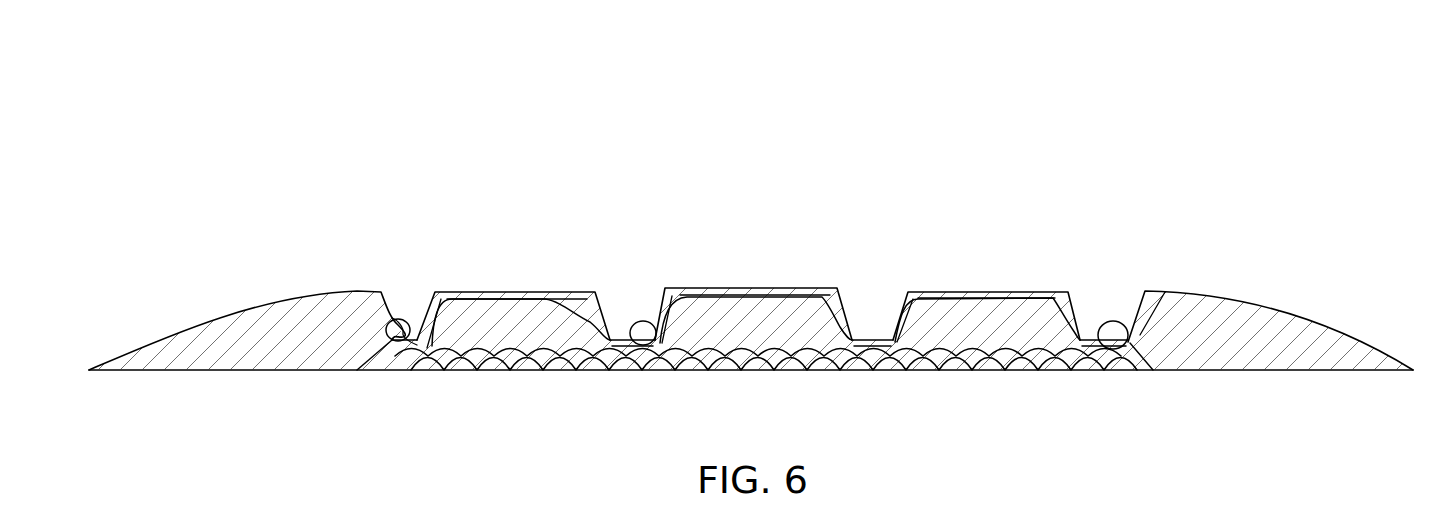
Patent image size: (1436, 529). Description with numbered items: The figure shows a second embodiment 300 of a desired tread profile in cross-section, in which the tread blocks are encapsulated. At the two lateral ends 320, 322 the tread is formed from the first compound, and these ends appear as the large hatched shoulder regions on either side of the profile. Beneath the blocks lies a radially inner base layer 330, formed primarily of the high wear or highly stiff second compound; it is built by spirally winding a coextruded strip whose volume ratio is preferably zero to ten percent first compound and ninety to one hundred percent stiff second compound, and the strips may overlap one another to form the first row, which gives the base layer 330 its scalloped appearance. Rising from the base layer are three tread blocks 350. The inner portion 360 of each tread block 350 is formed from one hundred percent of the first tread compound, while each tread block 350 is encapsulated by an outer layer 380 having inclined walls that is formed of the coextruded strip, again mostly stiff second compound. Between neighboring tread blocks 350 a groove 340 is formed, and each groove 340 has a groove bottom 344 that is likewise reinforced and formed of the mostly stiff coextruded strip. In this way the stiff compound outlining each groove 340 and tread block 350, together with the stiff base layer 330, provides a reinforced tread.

The second embodiment of tread profile 300 is at (357, 107).
The lateral end 320 is at (232, 312).
The lateral end 322 is at (1272, 312).
The radially inner base layer 330 is at (787, 371).
The groove 340 is at (400, 296).
The groove bottom 344 is at (389, 341).
The tread block 350 is at (502, 290).
The inner portion of tread block 360 is at (537, 297).
The outer layer 380 is at (424, 292).